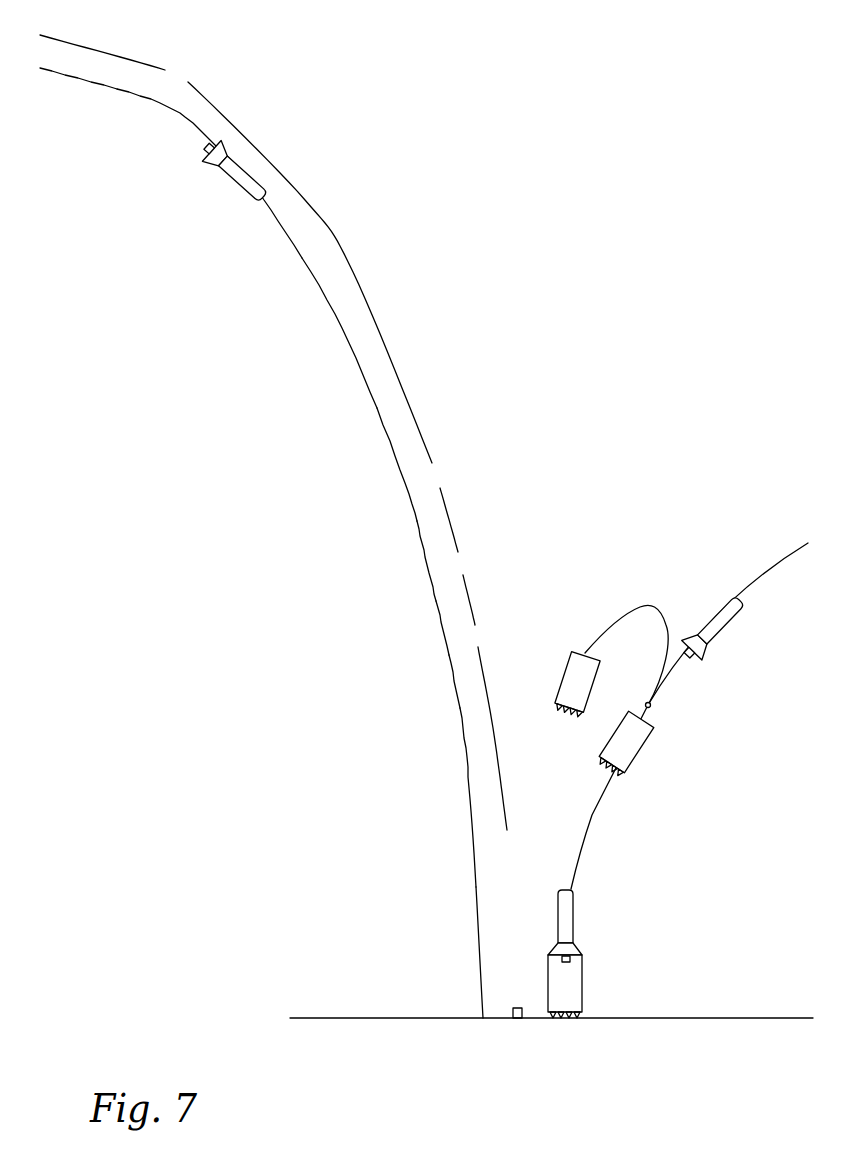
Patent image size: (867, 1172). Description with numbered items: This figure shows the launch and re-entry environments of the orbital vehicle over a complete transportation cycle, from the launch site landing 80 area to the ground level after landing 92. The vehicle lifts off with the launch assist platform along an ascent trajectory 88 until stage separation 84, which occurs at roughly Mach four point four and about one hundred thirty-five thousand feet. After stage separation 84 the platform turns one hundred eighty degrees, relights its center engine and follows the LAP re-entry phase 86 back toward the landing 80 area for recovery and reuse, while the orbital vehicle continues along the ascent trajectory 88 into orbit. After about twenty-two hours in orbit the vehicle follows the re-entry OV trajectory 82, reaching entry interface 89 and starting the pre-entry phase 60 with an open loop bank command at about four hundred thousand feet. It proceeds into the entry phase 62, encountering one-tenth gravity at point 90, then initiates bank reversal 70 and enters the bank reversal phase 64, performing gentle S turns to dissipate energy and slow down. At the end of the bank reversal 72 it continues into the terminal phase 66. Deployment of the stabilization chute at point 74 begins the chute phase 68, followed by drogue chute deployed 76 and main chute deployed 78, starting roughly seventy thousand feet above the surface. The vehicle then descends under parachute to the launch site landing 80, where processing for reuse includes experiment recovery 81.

The pre-entry phase 60 is at (133, 50).
The entry phase 62 is at (353, 272).
The bank reversal phase 64 is at (448, 510).
The terminal phase 66 is at (470, 595).
The chute phase 68 is at (490, 687).
The bank reversal initiation 70 is at (405, 483).
The end of bank reversal 72 is at (427, 565).
The stabilization chute deployed 74 is at (445, 638).
The drogue chute deployed 76 is at (452, 683).
The main chute deployed 78 is at (472, 838).
The launch site landing 80 is at (480, 1017).
The experiment recovery 81 is at (517, 1007).
The re-entry OV trajectory 82 is at (342, 328).
The stage separation 84 is at (653, 707).
The LAP re-entry phase 86 is at (645, 603).
The ascent trajectory 88 is at (770, 568).
The entry interface 89 is at (40, 70).
The 0.1 gravity point 90 is at (160, 104).
The ground level after landing 92 is at (730, 1018).